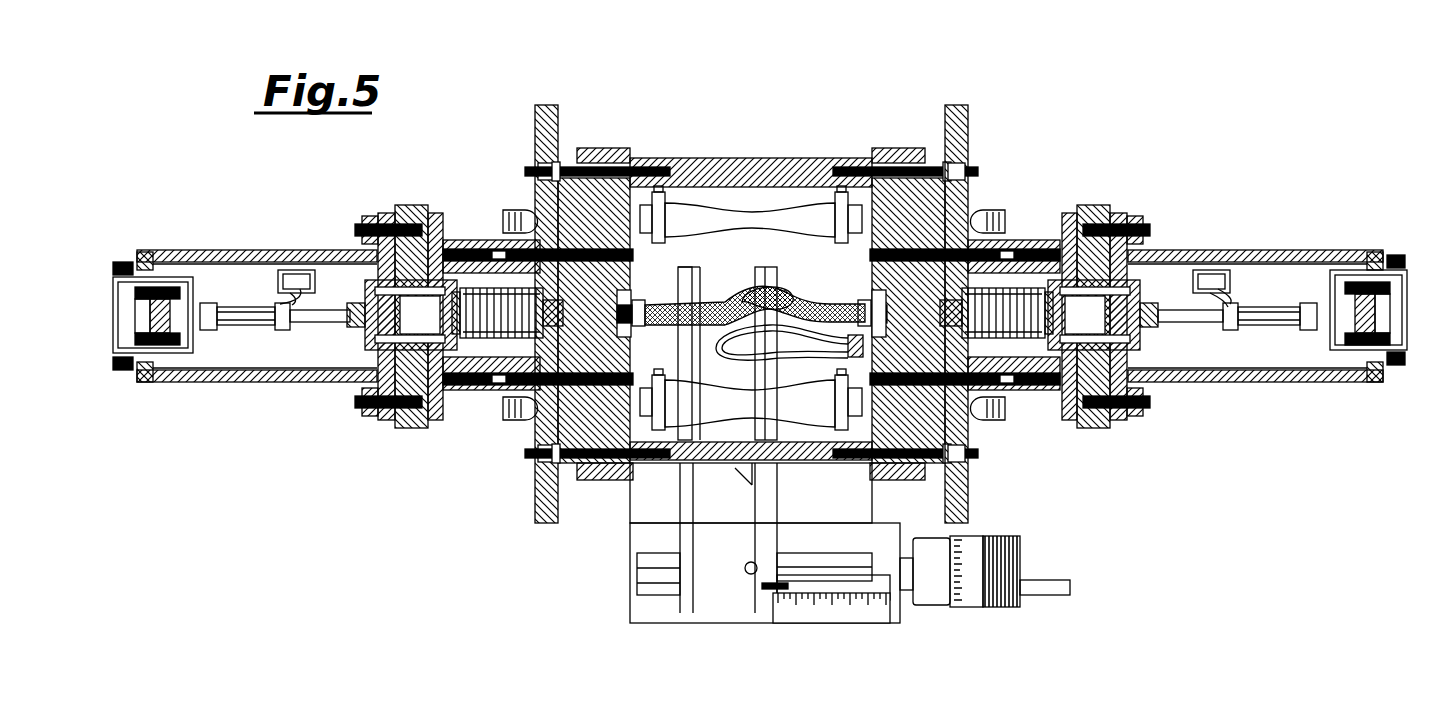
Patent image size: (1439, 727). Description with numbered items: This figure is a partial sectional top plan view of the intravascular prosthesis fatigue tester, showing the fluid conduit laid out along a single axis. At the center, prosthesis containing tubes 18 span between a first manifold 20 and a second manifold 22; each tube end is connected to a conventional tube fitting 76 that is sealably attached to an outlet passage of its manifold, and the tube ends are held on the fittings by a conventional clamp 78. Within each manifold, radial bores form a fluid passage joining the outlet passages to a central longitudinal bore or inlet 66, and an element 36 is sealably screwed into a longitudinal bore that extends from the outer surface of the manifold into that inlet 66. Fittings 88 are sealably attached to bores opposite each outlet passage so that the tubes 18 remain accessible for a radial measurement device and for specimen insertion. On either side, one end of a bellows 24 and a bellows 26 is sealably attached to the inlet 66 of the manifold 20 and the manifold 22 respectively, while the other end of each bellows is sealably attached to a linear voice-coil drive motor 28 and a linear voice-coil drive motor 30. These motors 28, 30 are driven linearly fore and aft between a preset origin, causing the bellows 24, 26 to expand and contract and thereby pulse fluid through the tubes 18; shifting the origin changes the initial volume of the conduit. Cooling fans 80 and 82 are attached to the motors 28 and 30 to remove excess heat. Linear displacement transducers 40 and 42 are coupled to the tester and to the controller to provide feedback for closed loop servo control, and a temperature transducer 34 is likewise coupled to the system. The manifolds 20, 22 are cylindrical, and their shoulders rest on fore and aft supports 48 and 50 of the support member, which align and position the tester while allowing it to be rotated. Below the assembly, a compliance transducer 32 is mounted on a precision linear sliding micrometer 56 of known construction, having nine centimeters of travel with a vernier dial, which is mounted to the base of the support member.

The prosthesis containing tube 18 is at (740, 213).
The first manifold 20 is at (595, 148).
The second manifold 22 is at (902, 148).
The bellows 24 is at (510, 290).
The bellows 26 is at (1010, 290).
The linear voice-coil drive motor 28 is at (412, 198).
The linear voice-coil drive motor 30 is at (1110, 197).
The compliance transducer 32 is at (720, 486).
The temperature transducer 34 is at (848, 346).
The element 36 is at (638, 300).
The linear displacement transducer 40 is at (240, 332).
The linear displacement transducer 42 is at (1263, 328).
The fore support 48 is at (957, 105).
The aft support 50 is at (546, 105).
The precision linear sliding micrometer 56 is at (635, 590).
The inlet 66 is at (616, 322).
The tube fitting 76 is at (633, 186).
The clamp 78 is at (660, 213).
The cooling fan 80 is at (104, 266).
The cooling fan 82 is at (1418, 268).
The fitting 88 is at (1002, 220).